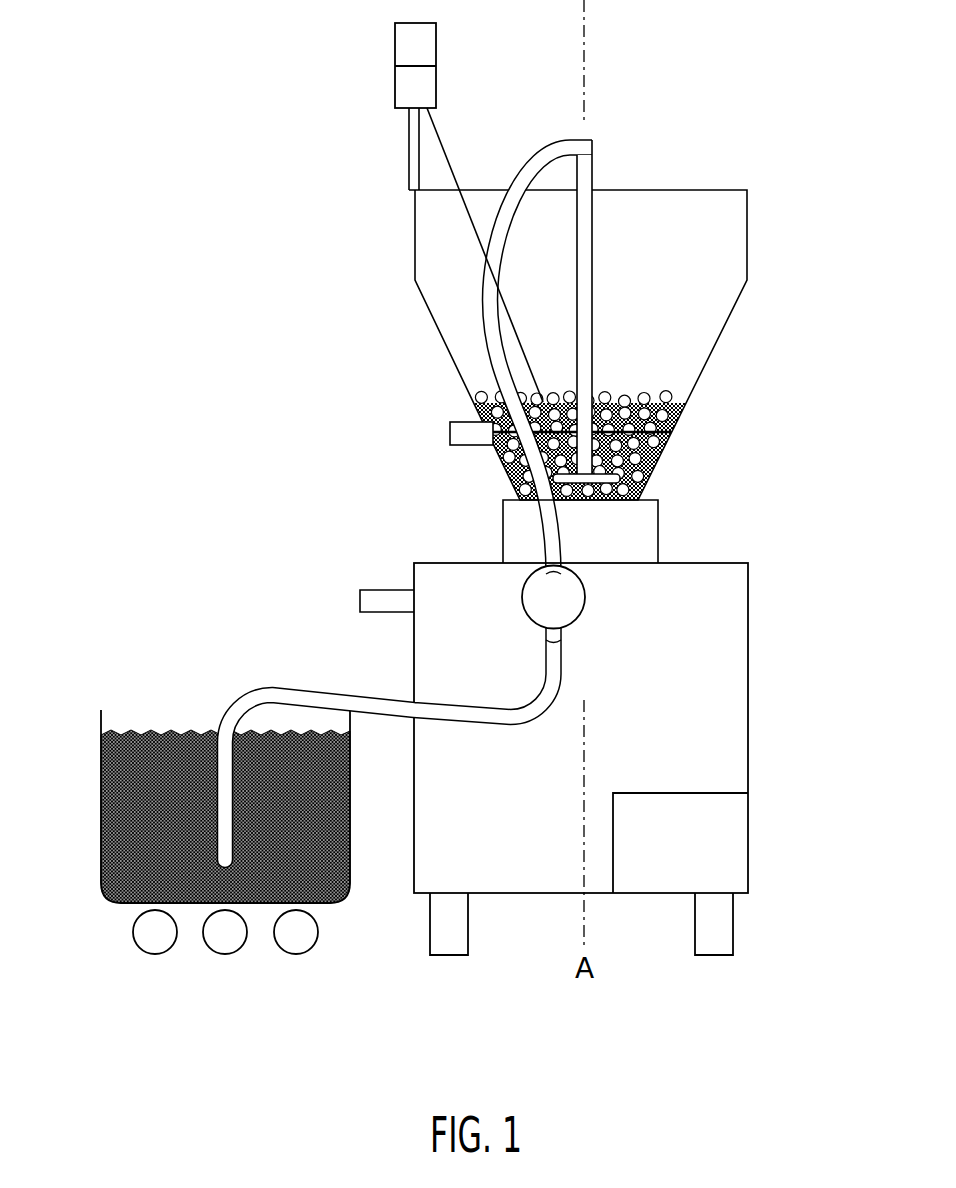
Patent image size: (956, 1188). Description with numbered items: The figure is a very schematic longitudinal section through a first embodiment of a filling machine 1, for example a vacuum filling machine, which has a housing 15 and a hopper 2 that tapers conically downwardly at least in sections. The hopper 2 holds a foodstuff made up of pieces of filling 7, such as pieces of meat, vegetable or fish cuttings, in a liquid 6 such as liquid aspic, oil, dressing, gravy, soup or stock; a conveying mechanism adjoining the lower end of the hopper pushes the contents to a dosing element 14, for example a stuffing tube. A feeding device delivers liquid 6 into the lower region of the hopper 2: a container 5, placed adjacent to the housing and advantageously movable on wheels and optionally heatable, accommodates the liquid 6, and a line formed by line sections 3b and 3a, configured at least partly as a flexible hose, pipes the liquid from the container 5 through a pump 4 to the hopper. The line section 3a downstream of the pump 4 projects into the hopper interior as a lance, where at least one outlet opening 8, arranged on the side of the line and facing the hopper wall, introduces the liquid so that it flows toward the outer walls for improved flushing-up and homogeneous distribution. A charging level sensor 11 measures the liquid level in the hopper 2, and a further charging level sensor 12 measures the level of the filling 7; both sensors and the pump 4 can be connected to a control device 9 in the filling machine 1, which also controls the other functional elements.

The filling machine 1 is at (820, 192).
The hopper 2 is at (733, 322).
The line section 3a is at (593, 217).
The line section 3b is at (381, 712).
The pump 4 is at (522, 606).
The container 5 is at (100, 796).
The liquid 6 is at (100, 856).
The pieces of filling 7 is at (672, 456).
The outlet opening 8 is at (512, 512).
The control device 9 is at (686, 860).
The charging level sensor 11 is at (467, 444).
The charging level sensor 12 is at (395, 78).
The dosing element 14 is at (378, 588).
The housing 15 is at (750, 703).